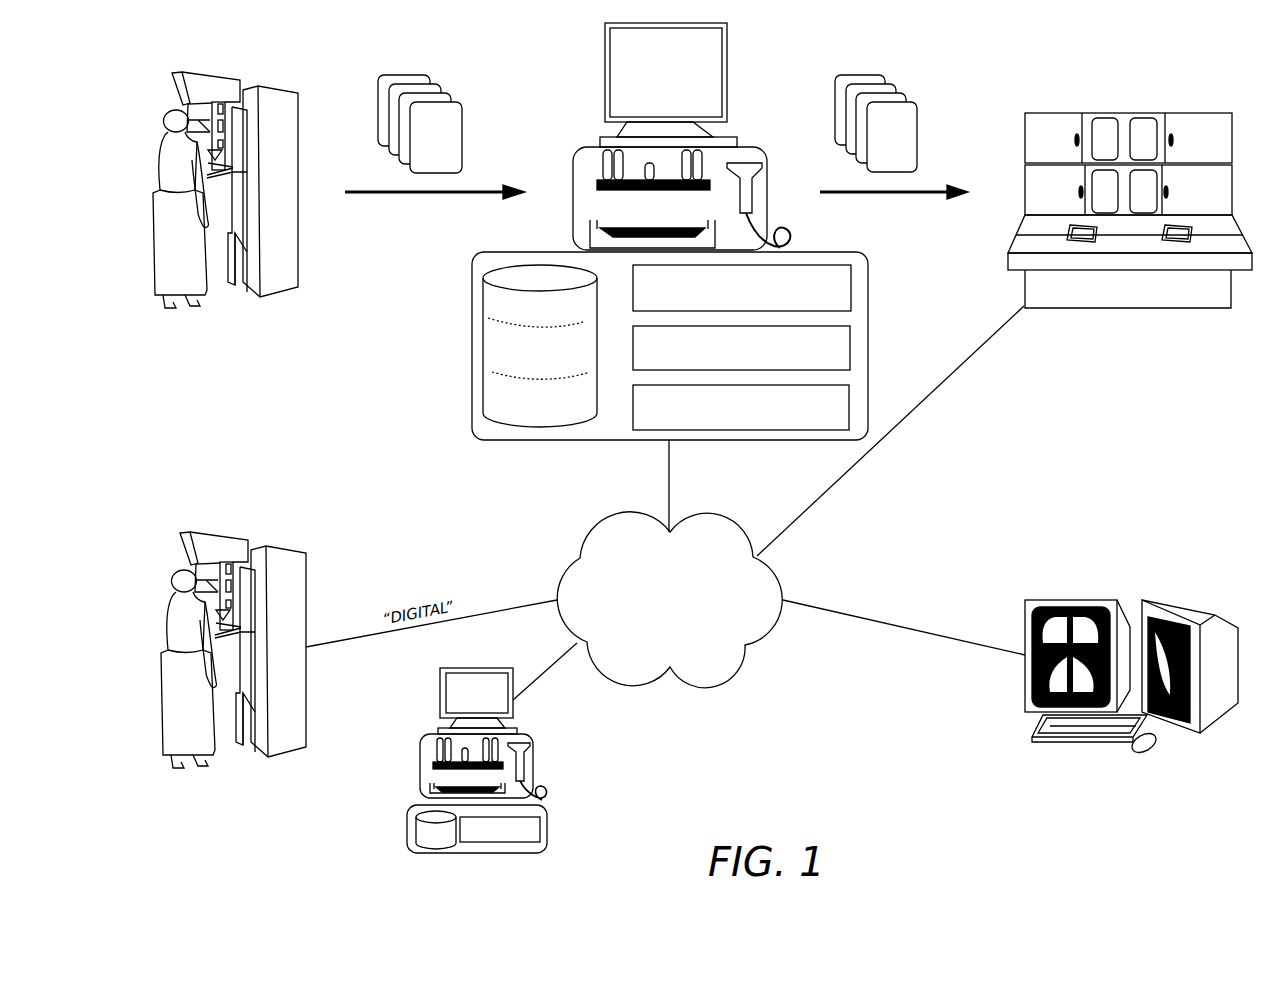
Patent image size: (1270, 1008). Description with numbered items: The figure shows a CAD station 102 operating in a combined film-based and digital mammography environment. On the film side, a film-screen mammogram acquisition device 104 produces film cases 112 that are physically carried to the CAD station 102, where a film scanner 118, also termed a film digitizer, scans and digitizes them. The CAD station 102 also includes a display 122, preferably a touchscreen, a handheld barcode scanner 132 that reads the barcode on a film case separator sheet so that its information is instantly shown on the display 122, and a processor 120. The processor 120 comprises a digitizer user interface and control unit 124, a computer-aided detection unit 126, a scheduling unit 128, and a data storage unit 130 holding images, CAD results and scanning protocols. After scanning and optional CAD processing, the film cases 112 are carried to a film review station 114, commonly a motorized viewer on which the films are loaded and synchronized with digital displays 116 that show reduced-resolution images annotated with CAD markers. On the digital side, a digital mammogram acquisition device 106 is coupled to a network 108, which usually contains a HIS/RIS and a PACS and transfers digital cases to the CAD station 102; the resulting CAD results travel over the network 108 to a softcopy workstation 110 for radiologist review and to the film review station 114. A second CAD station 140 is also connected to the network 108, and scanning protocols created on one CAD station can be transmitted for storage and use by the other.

The CAD station 102 is at (659, 231).
The film-screen mammogram acquisition device 104 is at (235, 307).
The digital mammogram acquisition device 106 is at (235, 765).
The network 108 is at (745, 661).
The softcopy workstation 110 is at (1125, 573).
The film cases 112 is at (380, 78).
The film review station 114 is at (1136, 178).
The digital displays 116 is at (1080, 225).
The film scanner 118 is at (572, 208).
The processor 120 is at (659, 339).
The display 122 is at (715, 72).
The digitizer user interface and control unit 124 is at (866, 282).
The computer-aided detection unit 126 is at (866, 336).
The scheduling unit 128 is at (866, 388).
The data storage unit 130 is at (477, 262).
The handheld barcode scanner 132 is at (753, 163).
The second CAD station 140 is at (417, 757).